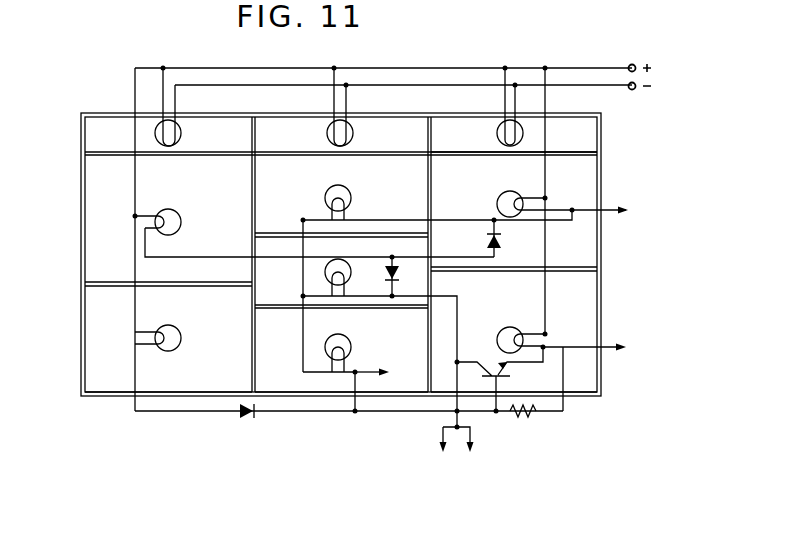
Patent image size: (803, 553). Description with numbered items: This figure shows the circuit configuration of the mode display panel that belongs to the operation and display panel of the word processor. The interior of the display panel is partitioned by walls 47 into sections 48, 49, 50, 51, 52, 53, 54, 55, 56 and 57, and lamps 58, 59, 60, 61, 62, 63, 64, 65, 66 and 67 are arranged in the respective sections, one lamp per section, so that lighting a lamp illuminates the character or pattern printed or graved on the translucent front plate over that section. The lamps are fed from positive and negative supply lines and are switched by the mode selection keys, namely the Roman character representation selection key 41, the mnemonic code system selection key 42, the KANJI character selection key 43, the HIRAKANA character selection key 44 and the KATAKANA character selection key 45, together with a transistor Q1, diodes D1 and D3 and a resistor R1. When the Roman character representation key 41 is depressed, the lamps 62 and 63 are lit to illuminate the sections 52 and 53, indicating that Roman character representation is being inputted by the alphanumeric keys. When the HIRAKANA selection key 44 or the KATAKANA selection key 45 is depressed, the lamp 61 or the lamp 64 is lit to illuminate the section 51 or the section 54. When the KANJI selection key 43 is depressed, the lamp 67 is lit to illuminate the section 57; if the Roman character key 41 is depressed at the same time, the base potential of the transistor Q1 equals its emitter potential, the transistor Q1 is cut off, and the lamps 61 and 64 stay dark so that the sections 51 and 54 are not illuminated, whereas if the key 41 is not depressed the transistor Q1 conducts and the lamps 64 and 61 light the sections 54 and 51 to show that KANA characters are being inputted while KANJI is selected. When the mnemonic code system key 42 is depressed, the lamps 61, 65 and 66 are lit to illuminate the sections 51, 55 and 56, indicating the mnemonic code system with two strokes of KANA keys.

The Roman character representation selection key 41 is at (388, 372).
The mnemonic code system selection key 42 is at (619, 210).
The KANJI character selection key 43 is at (598, 347).
The HIRAKANA character selection key 44 is at (442, 455).
The KATAKANA character selection key 45 is at (477, 456).
The walls 47 is at (92, 112).
The section 48 is at (95, 135).
The section 49 is at (392, 128).
The section 50 is at (587, 141).
The section 51 is at (90, 237).
The section 52 is at (104, 385).
The section 53 is at (384, 390).
The section 54 is at (252, 296).
The section 55 is at (272, 158).
The section 56 is at (596, 188).
The section 57 is at (584, 388).
The lamp 58 is at (181, 135).
The lamp 59 is at (353, 138).
The lamp 60 is at (497, 135).
The lamp 61 is at (181, 223).
The lamp 62 is at (181, 338).
The lamp 63 is at (350, 339).
The lamp 64 is at (323, 272).
The lamp 65 is at (353, 195).
The lamp 66 is at (502, 192).
The lamp 67 is at (521, 315).
The diode D1 is at (349, 429).
The diode D3 is at (518, 238).
The transistor Q1 is at (495, 360).
The resistor R1 is at (523, 428).